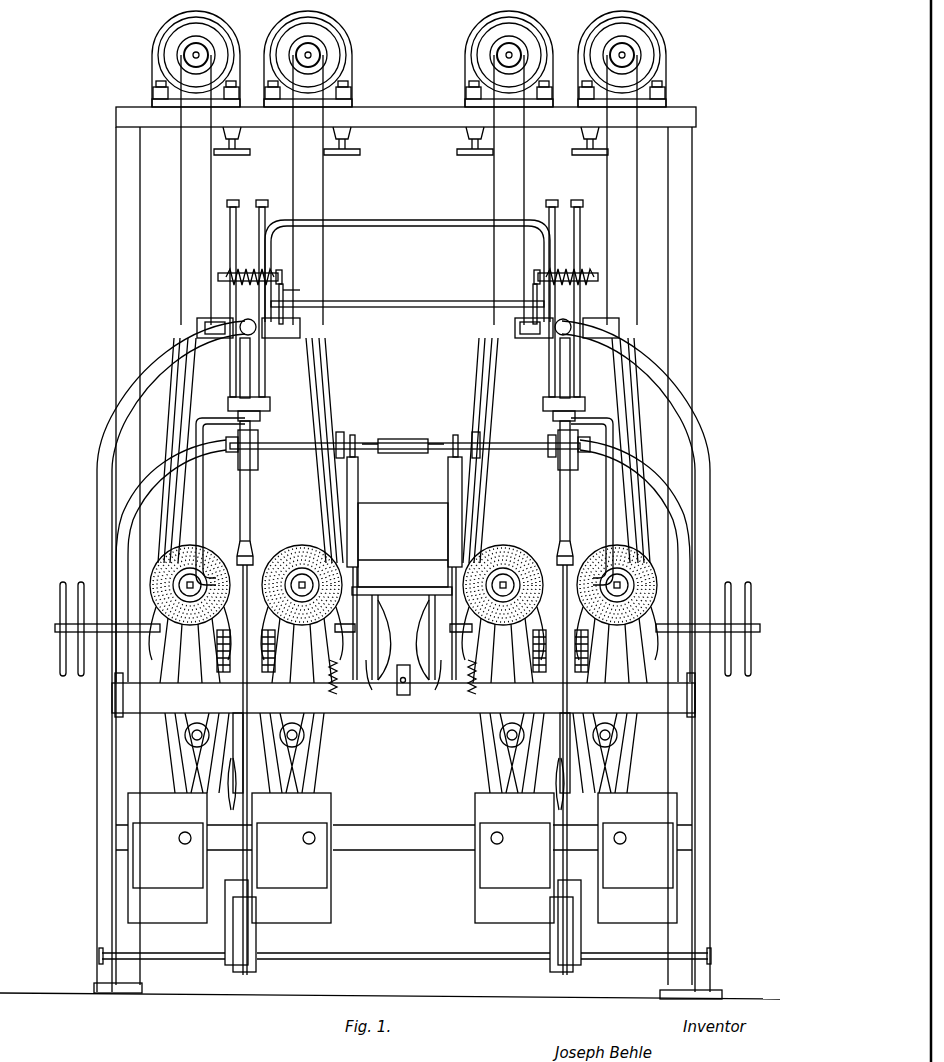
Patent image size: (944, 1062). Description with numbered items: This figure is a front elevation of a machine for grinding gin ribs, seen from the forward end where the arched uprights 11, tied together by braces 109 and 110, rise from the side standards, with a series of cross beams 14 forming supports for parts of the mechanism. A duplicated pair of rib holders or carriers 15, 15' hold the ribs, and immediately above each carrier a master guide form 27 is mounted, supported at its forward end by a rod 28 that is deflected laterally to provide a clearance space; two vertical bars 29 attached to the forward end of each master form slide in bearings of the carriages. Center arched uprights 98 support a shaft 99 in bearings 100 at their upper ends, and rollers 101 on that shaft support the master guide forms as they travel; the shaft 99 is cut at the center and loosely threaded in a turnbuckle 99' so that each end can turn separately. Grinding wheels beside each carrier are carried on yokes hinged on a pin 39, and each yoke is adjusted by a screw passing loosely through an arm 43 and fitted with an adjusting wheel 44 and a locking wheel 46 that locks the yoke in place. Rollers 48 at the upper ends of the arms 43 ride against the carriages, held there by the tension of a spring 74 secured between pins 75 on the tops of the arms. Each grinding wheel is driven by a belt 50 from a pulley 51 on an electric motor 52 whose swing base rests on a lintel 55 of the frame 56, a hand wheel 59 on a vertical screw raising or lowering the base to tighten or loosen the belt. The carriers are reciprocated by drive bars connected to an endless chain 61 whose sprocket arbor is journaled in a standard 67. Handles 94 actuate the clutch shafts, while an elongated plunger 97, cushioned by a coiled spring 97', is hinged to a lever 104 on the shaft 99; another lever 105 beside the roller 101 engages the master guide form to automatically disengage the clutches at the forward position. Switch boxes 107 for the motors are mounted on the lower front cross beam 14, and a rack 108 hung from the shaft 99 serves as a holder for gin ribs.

The arched upright 11 is at (136, 390).
The cross beam 14 is at (400, 824).
The rib holder or carrier 15 is at (400, 656).
The rib holder or carrier 15' is at (259, 656).
The master guide form 27 is at (552, 436).
The rod 28 is at (180, 488).
The vertical bar 29 is at (252, 198).
The pin 39 is at (504, 742).
The arm 43 is at (330, 398).
The adjusting wheel 44 is at (750, 586).
The locking wheel 46 is at (724, 586).
The roller 48 is at (514, 330).
The belt 50 is at (322, 281).
The pulley 51 is at (318, 54).
The electric motor 52 is at (345, 68).
The lintel 55 is at (402, 119).
The frame 56 is at (120, 237).
The hand wheel 59 is at (580, 150).
The endless chain 61 is at (272, 641).
The standard 67 is at (482, 720).
The spring 74 is at (282, 276).
The pin 75 is at (270, 272).
The handle 94 is at (424, 652).
The plunger 97 is at (404, 557).
The coiled spring 97' is at (403, 688).
The center arched upright 98 is at (158, 466).
The shaft 99 is at (405, 425).
The turnbuckle 99' is at (403, 427).
The bearing 100 is at (232, 453).
The roller 101 is at (252, 448).
The lever 104 is at (478, 436).
The lever 105 is at (256, 432).
The switch box 107 is at (142, 866).
The rack 108 is at (397, 503).
The brace 109 is at (406, 221).
The brace 110 is at (398, 301).